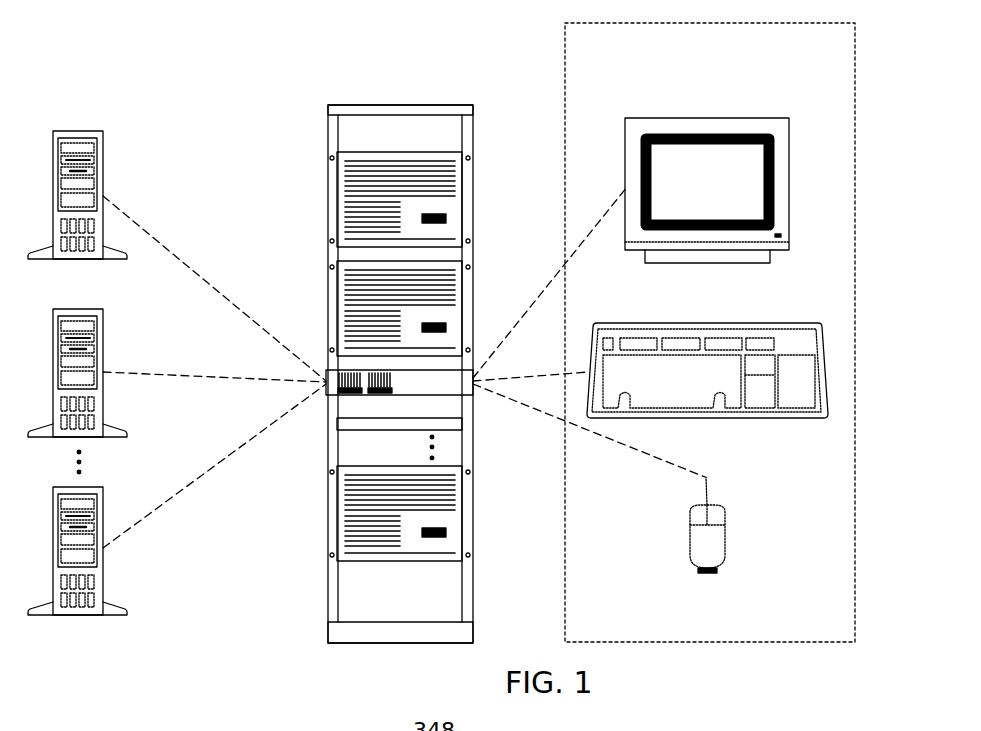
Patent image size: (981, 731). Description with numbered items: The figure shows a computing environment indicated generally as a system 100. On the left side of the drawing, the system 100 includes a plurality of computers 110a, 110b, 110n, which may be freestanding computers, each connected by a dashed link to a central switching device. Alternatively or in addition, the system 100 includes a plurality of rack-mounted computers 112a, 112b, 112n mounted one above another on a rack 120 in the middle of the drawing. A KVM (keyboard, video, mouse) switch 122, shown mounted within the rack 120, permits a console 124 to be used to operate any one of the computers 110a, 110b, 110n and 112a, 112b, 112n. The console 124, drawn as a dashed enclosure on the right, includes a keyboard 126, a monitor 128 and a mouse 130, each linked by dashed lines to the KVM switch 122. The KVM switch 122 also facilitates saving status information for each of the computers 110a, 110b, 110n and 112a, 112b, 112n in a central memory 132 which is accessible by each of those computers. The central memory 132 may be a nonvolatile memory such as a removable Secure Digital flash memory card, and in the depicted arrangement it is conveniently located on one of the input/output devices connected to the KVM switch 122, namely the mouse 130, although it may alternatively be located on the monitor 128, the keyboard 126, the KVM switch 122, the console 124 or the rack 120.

The system 100 is at (210, 110).
The computer 110a is at (103, 182).
The computer 110b is at (103, 332).
The computer 110n is at (103, 510).
The rack 120 is at (437, 103).
The rack-mounted computer 112a is at (473, 200).
The rack-mounted computer 112b is at (473, 300).
The rack-mounted computer 112n is at (473, 517).
The KVM switch 122 is at (442, 395).
The console 124 is at (770, 642).
The keyboard 126 is at (830, 400).
The monitor 128 is at (789, 218).
The mouse 130 is at (725, 545).
The central memory 132 is at (728, 592).